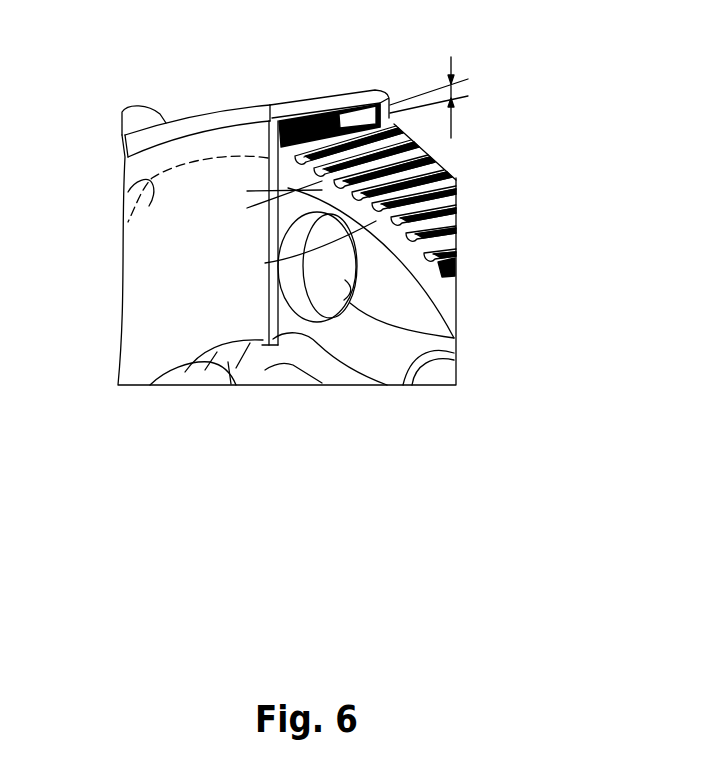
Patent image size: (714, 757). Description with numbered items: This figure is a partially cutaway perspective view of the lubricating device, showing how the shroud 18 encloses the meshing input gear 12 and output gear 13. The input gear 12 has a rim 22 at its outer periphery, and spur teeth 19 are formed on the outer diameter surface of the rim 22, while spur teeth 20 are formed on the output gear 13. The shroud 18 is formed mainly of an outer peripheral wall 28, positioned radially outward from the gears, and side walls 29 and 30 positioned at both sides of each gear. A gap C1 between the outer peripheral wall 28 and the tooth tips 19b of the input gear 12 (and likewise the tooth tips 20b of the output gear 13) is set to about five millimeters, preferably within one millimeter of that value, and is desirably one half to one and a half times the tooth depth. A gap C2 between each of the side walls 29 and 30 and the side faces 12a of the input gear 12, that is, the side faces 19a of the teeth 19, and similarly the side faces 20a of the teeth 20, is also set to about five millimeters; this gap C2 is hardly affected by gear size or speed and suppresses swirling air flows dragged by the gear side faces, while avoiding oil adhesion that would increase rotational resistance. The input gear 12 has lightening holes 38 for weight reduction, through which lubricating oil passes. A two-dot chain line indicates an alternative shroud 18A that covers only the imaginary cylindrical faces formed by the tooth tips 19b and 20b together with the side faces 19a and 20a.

The input gear 12 is at (340, 294).
The output gear 13 is at (392, 343).
The side face of the input gear 12a is at (268, 263).
The shroud 18 is at (203, 114).
The shroud 18A is at (124, 222).
The spur teeth 19 is at (446, 174).
The spur teeth 20 is at (443, 170).
The side faces of the teeth 19a is at (540, 273).
The side faces of the teeth 20a is at (455, 263).
The tooth tips 19b is at (531, 234).
The tooth tips 20b is at (455, 223).
The rim 22 is at (433, 293).
The outer peripheral wall 28 is at (313, 104).
The side wall 29 is at (230, 177).
The side wall 30 is at (393, 121).
The lightening holes 38 is at (454, 338).
The gap C1 is at (450, 97).
The gap C2 is at (267, 219).